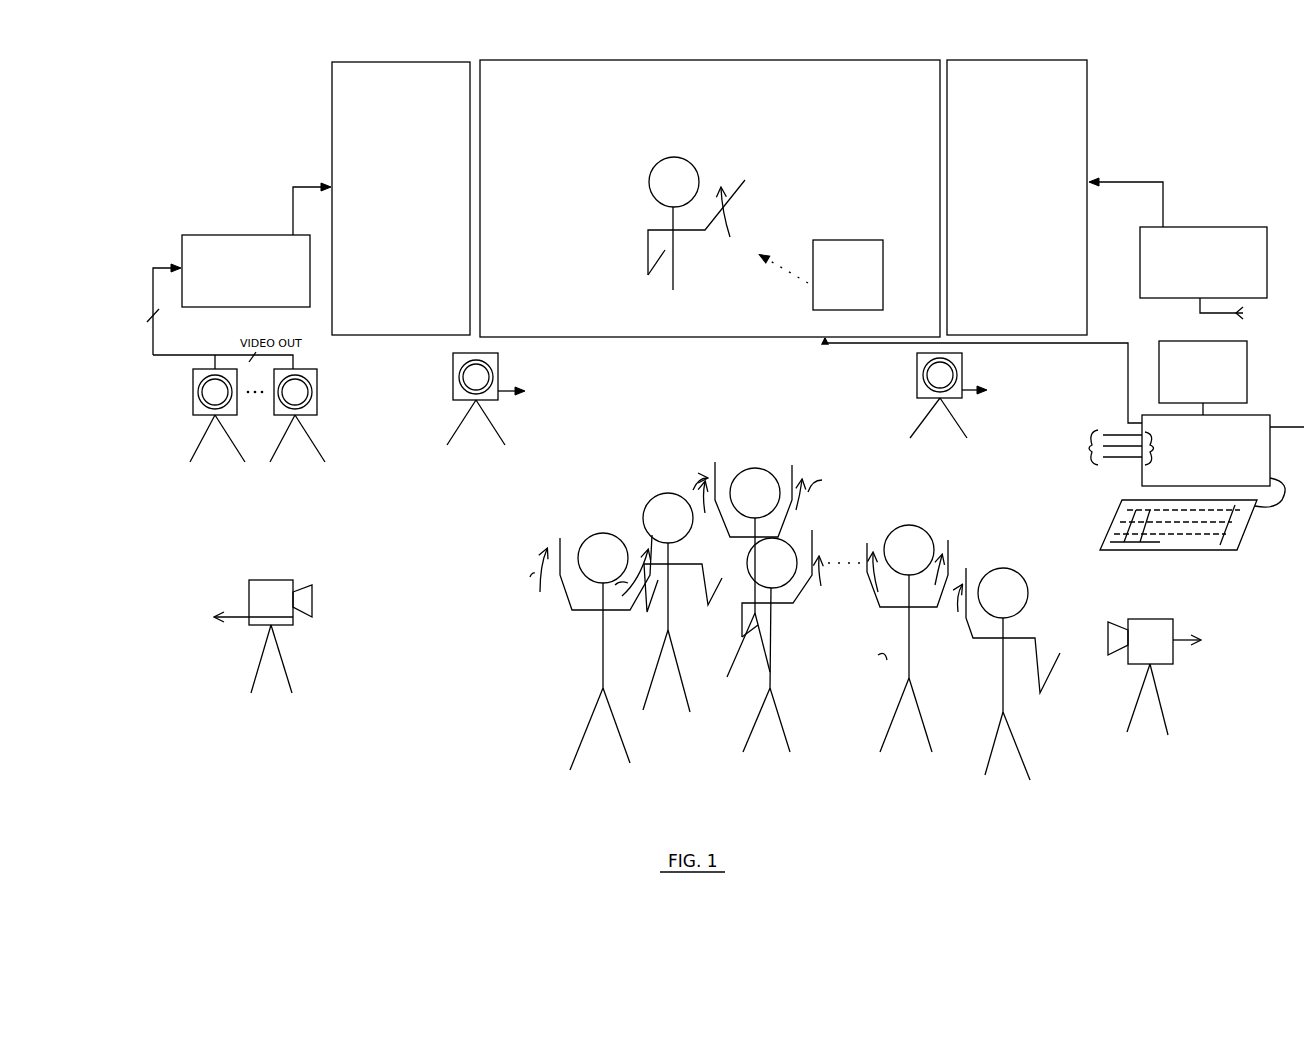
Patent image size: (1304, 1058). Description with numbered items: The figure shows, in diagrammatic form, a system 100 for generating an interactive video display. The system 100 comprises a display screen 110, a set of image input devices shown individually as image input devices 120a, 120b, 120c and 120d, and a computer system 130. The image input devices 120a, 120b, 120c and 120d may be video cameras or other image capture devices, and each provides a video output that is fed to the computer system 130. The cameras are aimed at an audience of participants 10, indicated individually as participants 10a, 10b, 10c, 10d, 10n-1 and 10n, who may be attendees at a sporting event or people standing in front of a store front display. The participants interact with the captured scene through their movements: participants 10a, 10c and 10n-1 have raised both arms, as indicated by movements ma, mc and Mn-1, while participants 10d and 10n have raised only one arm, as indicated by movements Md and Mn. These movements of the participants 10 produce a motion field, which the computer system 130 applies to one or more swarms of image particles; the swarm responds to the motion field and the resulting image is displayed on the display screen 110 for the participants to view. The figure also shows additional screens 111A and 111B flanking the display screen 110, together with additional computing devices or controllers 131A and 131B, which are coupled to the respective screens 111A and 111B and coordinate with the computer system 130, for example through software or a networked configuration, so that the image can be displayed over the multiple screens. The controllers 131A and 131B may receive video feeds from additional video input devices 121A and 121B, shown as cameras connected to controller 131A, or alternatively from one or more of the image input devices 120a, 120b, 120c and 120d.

The system for generating an interactive video display 100 is at (962, 38).
The display screen 110 is at (750, 56).
The additional screen 111A is at (410, 62).
The additional screen 111B is at (1075, 60).
The additional computing device or controller 131A is at (195, 235).
The additional computing device or controller 131B is at (1252, 226).
The computer system 130 is at (1257, 357).
The additional video input device 121A is at (204, 466).
The additional video input device 121B is at (305, 466).
The image input device 120a is at (500, 373).
The image input device 120b is at (917, 378).
The image input device 120c is at (1160, 617).
The image input device 120d is at (272, 580).
The participants 10 is at (897, 477).
The participant 10a is at (591, 527).
The participant 10b is at (659, 488).
The participant 10c is at (750, 458).
The participant 10d is at (676, 142).
The participant 10n-1 is at (931, 526).
The participant 10n is at (1023, 560).
The movement of participant 10a ma is at (578, 578).
The movement of participant 10c mc is at (757, 487).
The movement of participant 10d Md is at (791, 400).
The movement of participant 10n-1 Mn-1 is at (934, 603).
The movement of participant 10n Mn is at (955, 614).